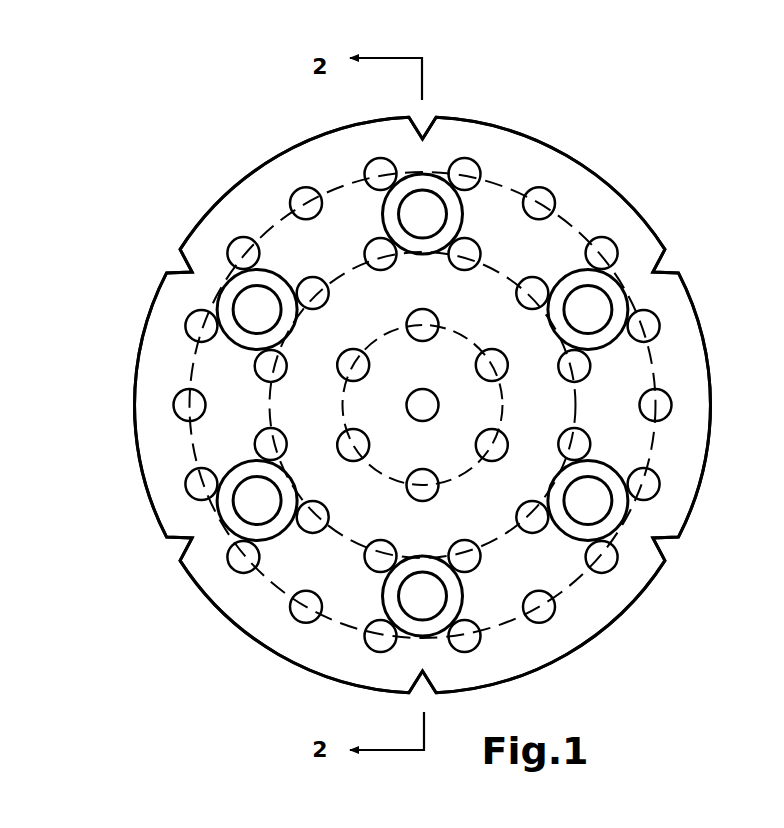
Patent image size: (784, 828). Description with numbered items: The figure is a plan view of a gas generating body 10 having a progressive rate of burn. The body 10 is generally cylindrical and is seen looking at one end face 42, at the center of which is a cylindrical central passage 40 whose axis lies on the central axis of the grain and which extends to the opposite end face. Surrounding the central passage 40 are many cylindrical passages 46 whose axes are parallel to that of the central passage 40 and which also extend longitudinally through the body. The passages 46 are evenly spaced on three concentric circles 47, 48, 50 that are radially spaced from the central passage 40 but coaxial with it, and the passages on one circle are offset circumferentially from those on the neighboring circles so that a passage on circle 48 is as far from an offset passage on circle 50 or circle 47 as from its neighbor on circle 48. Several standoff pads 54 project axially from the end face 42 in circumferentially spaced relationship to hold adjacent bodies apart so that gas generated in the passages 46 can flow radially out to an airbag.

The gas generating body 10 is at (630, 156).
The cylindrical central passage 40 is at (421, 402).
The end face 42 is at (690, 437).
The cylindrical passages 46 is at (500, 365).
The concentric circle 47 is at (381, 338).
The concentric circle 48 is at (333, 277).
The concentric circle 50 is at (280, 218).
The standoff pads 54 is at (423, 213).